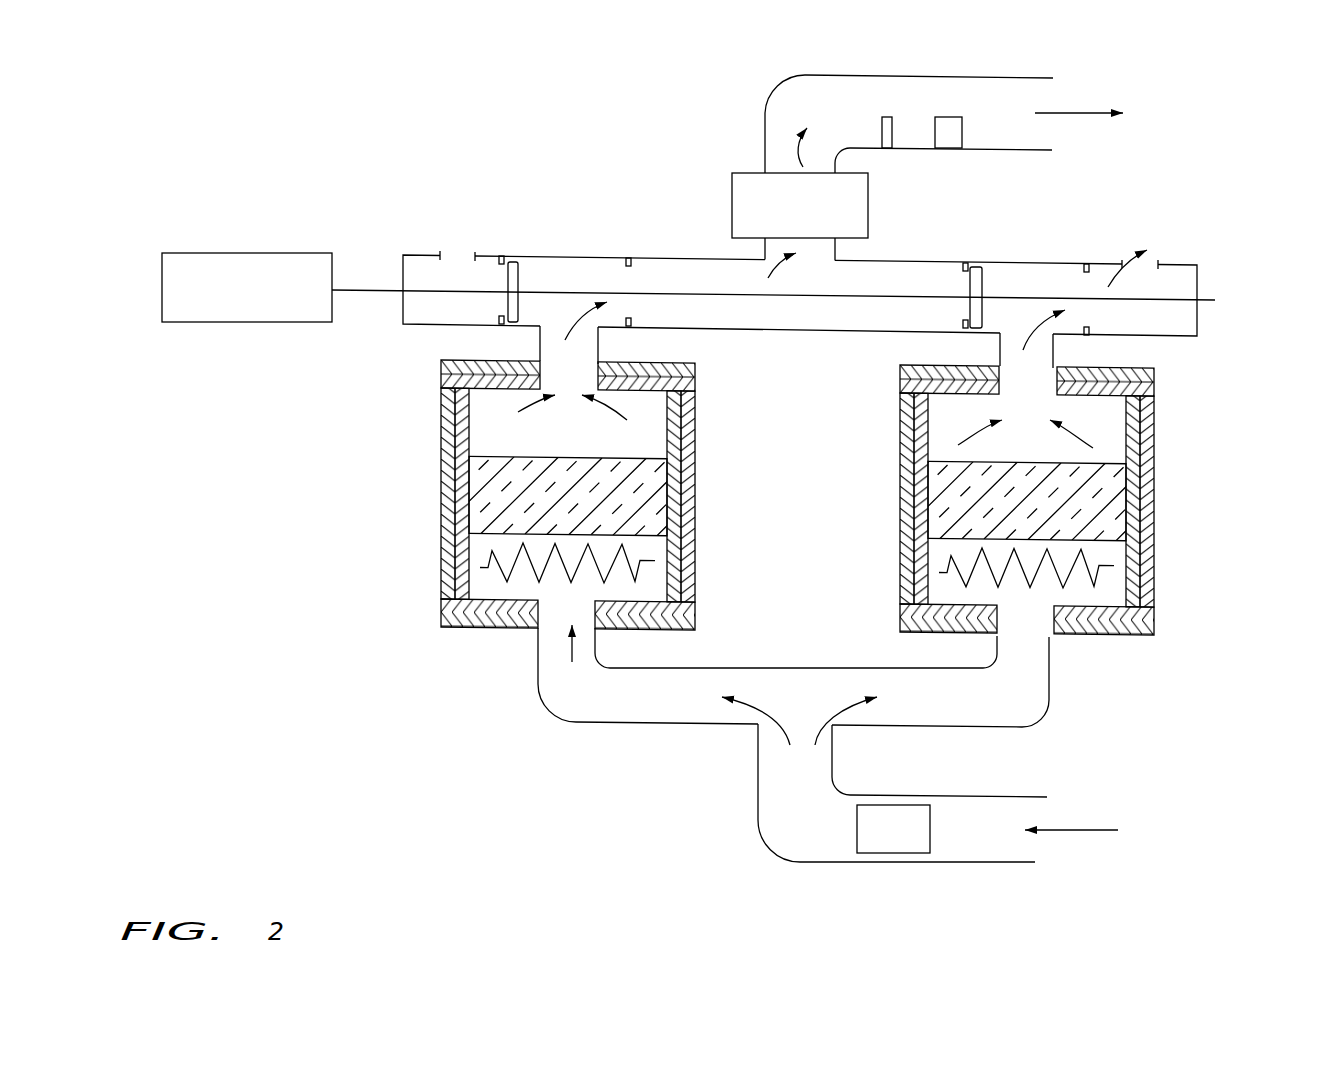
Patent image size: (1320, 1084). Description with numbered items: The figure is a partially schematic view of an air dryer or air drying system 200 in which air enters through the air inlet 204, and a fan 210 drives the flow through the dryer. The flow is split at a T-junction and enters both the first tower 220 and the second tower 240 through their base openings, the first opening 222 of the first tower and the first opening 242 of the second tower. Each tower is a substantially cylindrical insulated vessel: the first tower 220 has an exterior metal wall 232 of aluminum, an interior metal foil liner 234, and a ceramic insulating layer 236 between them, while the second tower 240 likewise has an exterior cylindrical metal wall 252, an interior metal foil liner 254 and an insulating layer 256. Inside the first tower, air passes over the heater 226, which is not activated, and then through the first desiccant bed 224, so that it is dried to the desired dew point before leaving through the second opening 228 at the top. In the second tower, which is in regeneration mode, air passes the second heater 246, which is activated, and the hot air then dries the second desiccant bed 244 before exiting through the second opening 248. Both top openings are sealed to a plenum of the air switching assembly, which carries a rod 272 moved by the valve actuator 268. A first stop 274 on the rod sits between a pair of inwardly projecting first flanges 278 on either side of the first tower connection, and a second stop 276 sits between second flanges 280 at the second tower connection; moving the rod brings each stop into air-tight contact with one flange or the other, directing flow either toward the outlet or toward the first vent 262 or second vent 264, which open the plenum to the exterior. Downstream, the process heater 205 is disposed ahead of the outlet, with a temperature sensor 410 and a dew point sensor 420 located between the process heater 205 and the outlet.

The air drying system 200 is at (1268, 104).
The air inlet 204 is at (1033, 862).
The process heater 205 is at (742, 173).
The fan 210 is at (895, 853).
The first tower 220 is at (395, 462).
The first opening of first tower 222 is at (545, 640).
The first desiccant bed 224 is at (530, 509).
The heater of first tower 226 is at (498, 575).
The second opening of first tower 228 is at (540, 342).
The exterior metal wall 232 is at (697, 380).
The interior metal foil liner 234 is at (697, 458).
The insulating layer 236 is at (697, 418).
The second tower 240 is at (1160, 488).
The first opening of second tower 242 is at (1052, 650).
The second desiccant bed 244 is at (1083, 510).
The second heater 246 is at (1098, 573).
The second opening of second tower 248 is at (1037, 385).
The exterior cylindrical metal wall 252 is at (903, 500).
The interior metal foil liner 254 is at (903, 578).
The insulating layer 256 is at (908, 540).
The first vent 262 is at (451, 257).
The second vent 264 is at (1153, 260).
The valve actuator 268 is at (240, 253).
The rod 272 is at (1208, 300).
The first stop 274 is at (516, 262).
The second stop 276 is at (983, 280).
The first flanges 278 is at (504, 256).
The second flanges 280 is at (965, 263).
The temperature sensor 410 is at (882, 130).
The dew point sensor 420 is at (953, 135).